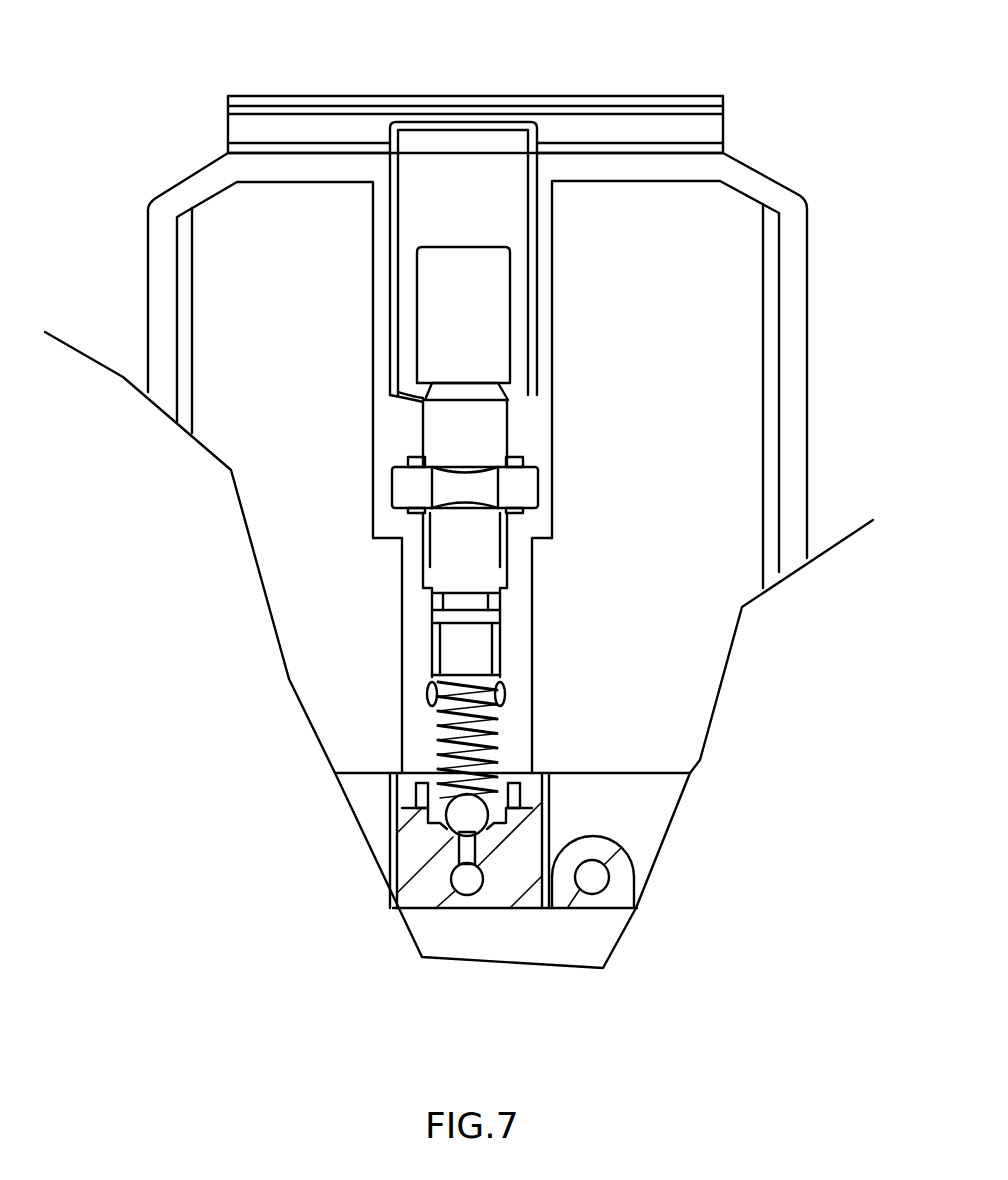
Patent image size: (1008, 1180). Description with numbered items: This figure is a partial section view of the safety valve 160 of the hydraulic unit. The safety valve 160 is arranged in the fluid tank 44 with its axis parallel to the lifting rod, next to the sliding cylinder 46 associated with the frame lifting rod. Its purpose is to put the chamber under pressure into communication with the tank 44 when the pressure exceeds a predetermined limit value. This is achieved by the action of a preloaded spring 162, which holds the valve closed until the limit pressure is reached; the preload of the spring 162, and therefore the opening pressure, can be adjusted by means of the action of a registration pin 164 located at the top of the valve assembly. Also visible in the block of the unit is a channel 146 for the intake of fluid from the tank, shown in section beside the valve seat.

The fluid tank 44 is at (808, 397).
The sliding cylinder 46 is at (418, 856).
The channel 146 is at (596, 882).
The safety valve 160 is at (538, 667).
The preloaded spring 162 is at (497, 730).
The registration pin 164 is at (478, 313).